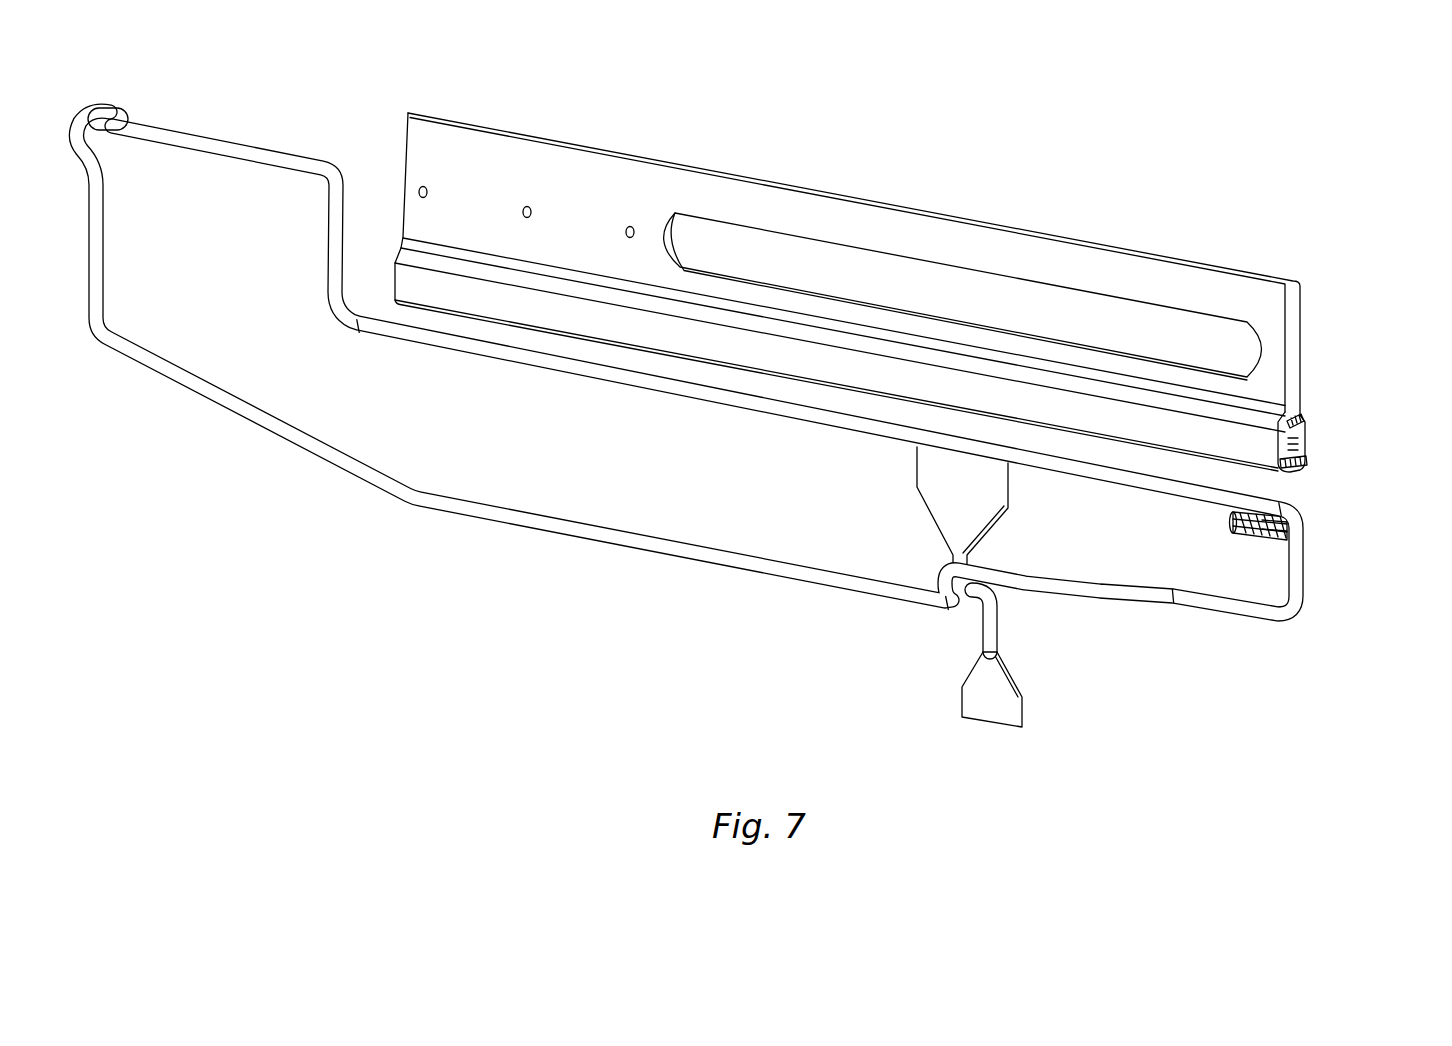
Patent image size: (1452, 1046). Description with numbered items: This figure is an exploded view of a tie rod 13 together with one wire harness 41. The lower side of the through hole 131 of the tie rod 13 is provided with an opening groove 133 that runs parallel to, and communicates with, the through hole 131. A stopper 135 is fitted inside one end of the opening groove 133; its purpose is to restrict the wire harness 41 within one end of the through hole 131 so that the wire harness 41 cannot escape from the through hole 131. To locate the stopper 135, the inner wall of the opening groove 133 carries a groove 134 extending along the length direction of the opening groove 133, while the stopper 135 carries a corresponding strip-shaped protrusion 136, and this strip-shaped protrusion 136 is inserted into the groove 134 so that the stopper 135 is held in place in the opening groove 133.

The tie rod 13 is at (652, 176).
The through hole 131 is at (1300, 420).
The opening groove 133 is at (1307, 460).
The groove 134 is at (1300, 470).
The stopper 135 is at (1290, 536).
The strip-shaped protrusion 136 is at (1270, 540).
The wire harness 41 is at (1122, 488).